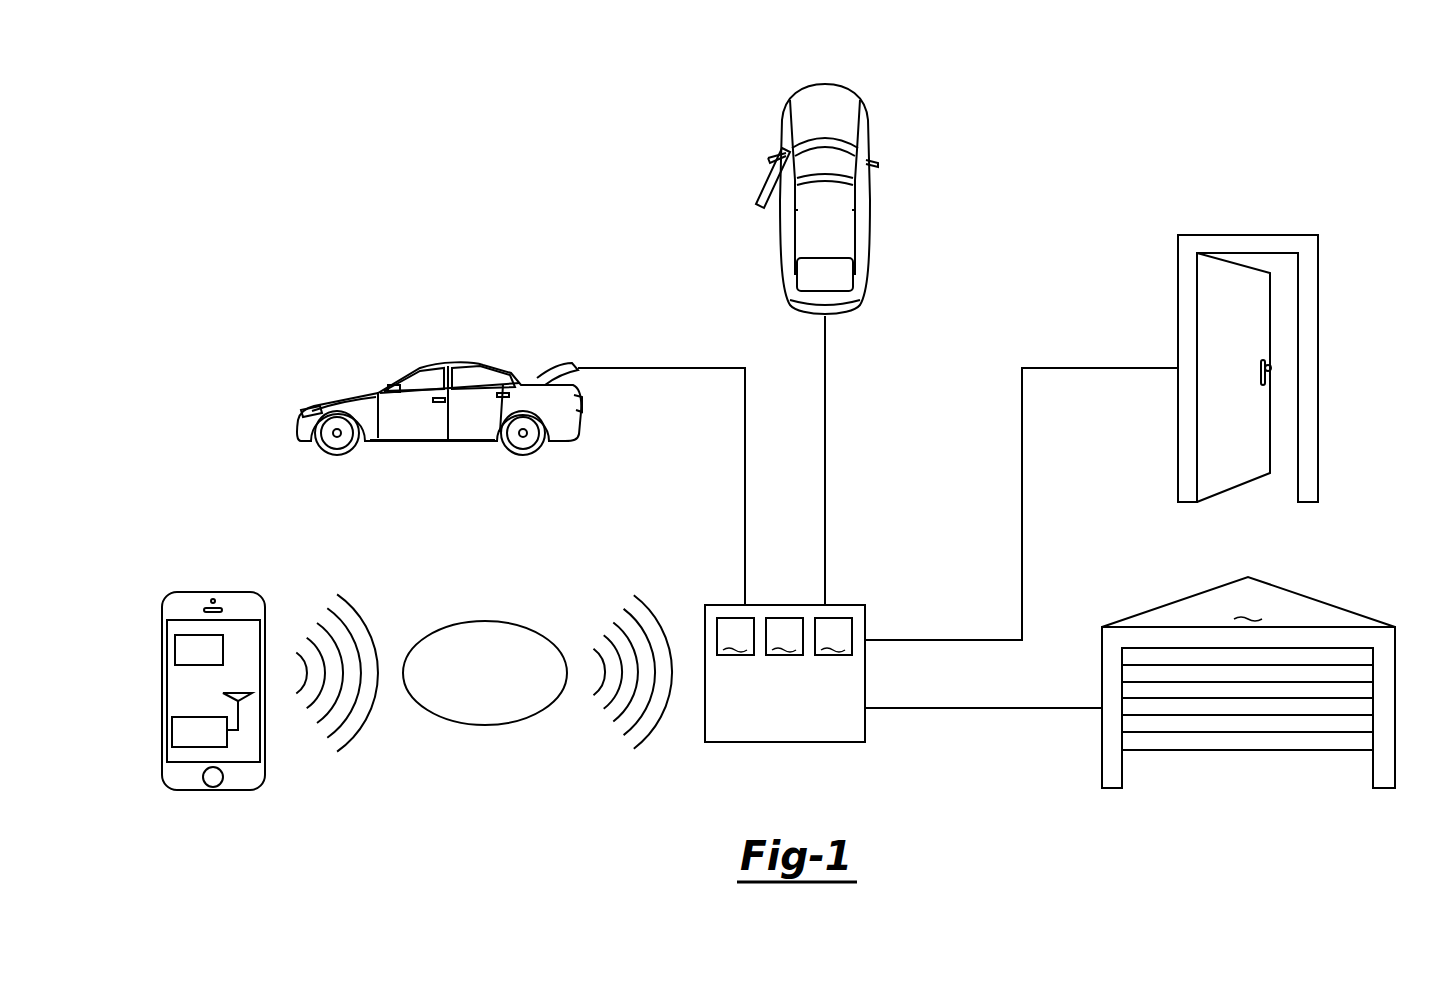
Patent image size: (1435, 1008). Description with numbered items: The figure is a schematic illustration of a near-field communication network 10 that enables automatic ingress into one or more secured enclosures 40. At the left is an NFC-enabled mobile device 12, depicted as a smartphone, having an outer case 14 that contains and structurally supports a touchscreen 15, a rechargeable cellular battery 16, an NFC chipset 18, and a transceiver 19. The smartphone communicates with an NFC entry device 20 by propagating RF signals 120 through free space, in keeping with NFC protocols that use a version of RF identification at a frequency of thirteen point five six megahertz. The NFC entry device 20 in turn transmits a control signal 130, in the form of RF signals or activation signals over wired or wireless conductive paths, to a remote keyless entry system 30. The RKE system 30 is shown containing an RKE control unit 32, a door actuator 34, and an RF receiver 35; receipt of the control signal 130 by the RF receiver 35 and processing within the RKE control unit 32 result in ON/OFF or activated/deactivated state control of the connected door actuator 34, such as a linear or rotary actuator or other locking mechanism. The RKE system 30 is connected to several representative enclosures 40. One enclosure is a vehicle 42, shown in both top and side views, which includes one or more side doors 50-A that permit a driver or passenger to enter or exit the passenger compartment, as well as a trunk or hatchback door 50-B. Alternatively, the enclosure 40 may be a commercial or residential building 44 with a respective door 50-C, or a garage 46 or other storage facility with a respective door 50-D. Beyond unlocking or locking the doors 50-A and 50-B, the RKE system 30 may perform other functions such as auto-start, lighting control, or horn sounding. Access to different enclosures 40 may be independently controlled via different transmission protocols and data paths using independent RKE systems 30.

The NFC network 10 is at (470, 167).
The mobile device 12 is at (193, 569).
The outer case 14 is at (215, 592).
The touchscreen 15 is at (245, 633).
The cellular battery 16 is at (175, 648).
The NFC chipset 18 is at (172, 732).
The transceiver 19 is at (245, 718).
The NFC entry device 20 is at (483, 621).
The RKE system 30 is at (806, 699).
The RKE control unit 32 is at (735, 636).
The door actuator 34 is at (784, 636).
The RF receiver 35 is at (833, 636).
The enclosure 40 is at (1216, 720).
The vehicle 42 is at (583, 244).
The building 44 is at (1295, 325).
The garage 46 is at (1248, 602).
The side door 50-A is at (775, 168).
The trunk or hatchback door 50-B is at (546, 368).
The building door 50-C is at (1273, 202).
The garage door 50-D is at (1318, 782).
The RF signals 120 is at (366, 723).
The control signal 130 is at (645, 605).